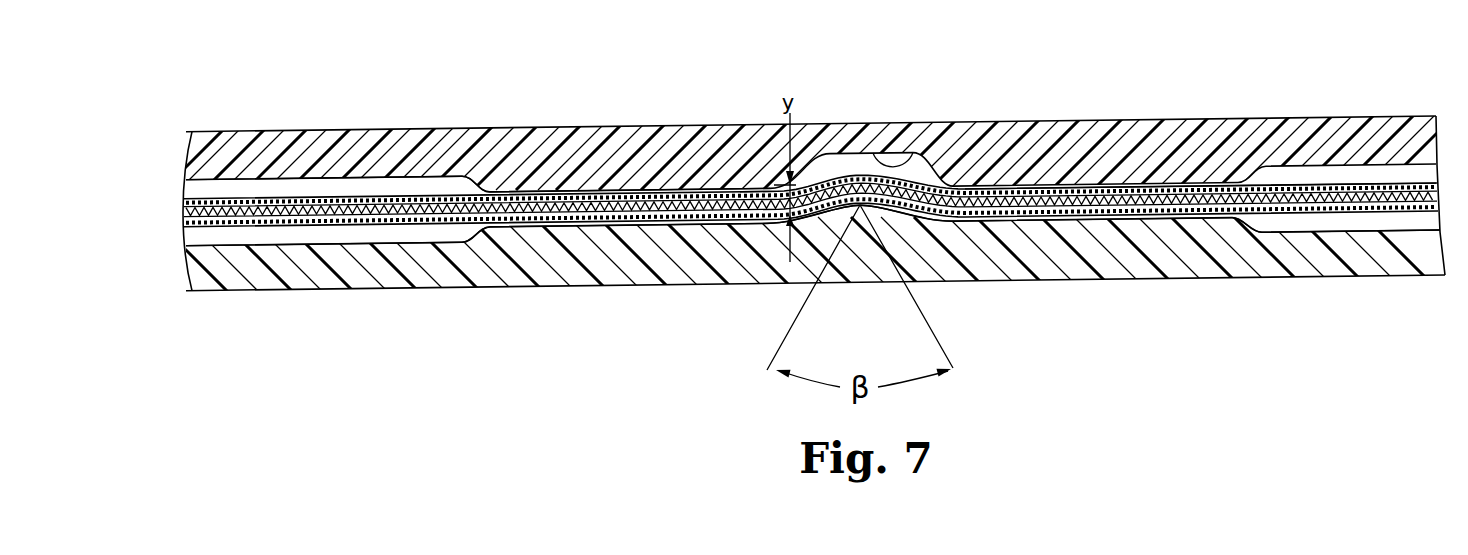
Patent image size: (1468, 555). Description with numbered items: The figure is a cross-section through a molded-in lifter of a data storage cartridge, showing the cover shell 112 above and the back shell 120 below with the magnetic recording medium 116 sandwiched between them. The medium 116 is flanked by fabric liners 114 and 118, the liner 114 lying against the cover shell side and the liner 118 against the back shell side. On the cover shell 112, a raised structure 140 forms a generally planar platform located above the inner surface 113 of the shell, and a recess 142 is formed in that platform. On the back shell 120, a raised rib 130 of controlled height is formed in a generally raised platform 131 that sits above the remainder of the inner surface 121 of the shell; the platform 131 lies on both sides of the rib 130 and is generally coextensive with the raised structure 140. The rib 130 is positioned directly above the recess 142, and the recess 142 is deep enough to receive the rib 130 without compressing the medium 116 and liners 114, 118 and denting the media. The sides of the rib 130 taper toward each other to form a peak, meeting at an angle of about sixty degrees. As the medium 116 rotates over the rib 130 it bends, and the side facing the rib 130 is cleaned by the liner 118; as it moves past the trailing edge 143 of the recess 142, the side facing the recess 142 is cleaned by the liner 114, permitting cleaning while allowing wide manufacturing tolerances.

The cover shell 112 is at (696, 114).
The inner surface of the shell 113 is at (426, 175).
The fabric liner 114 is at (285, 197).
The magnetic recording medium 116 is at (184, 210).
The fabric liner 118 is at (301, 225).
The back shell 120 is at (611, 320).
The inner surface of the shell 121 is at (409, 243).
The raised rib 130 is at (868, 211).
The raised platform 131 is at (1189, 215).
The raised structure 140 is at (1187, 185).
The recess 142 is at (903, 163).
The trailing edge 143 is at (767, 187).